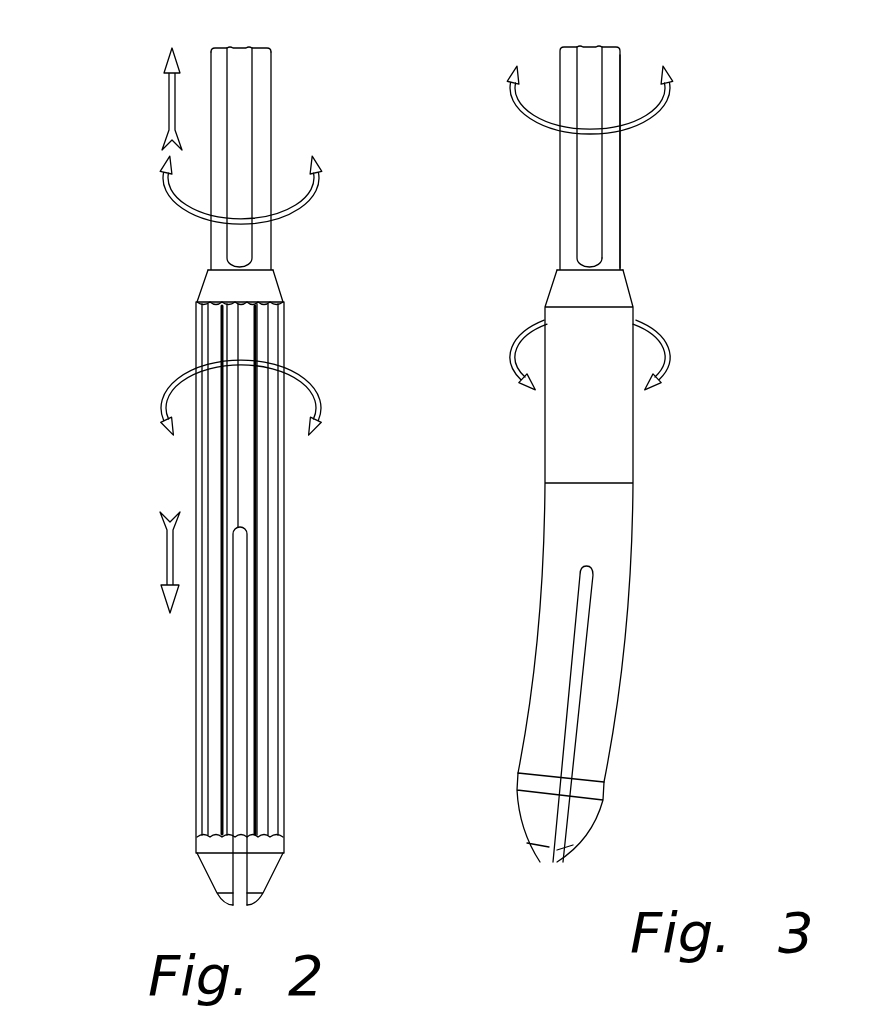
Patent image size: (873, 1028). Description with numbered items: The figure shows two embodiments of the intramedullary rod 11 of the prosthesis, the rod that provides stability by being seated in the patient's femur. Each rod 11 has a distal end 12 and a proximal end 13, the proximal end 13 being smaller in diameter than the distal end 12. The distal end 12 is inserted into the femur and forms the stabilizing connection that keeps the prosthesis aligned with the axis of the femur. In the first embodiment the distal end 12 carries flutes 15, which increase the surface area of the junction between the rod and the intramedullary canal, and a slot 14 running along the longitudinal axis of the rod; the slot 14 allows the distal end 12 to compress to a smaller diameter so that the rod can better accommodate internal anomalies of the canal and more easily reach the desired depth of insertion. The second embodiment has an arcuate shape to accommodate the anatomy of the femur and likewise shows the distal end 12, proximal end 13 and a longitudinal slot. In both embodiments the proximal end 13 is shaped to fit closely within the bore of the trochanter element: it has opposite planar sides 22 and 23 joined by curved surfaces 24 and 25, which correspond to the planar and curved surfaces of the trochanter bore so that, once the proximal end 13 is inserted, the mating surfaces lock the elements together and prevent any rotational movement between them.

In FIG. 2, the intramedullary rod 11 is at (331, 692).
In FIG. 3, the intramedullary rod 11 is at (508, 616).
In FIG. 2, the distal end 12 is at (160, 815).
In FIG. 3, the distal end 12 is at (480, 775).
In FIG. 2, the proximal end 13 is at (260, 141).
In FIG. 3, the proximal end 13 is at (532, 214).
In FIG. 2, the slot 14 is at (241, 795).
In FIG. 2, the flutes 15 is at (390, 448).
In FIG. 2, the planar side 22 is at (352, 23).
In FIG. 3, the planar side 23 is at (590, 200).
In FIG. 2, the curved surface 24 is at (363, 60).
In FIG. 3, the curved surface 25 is at (610, 168).